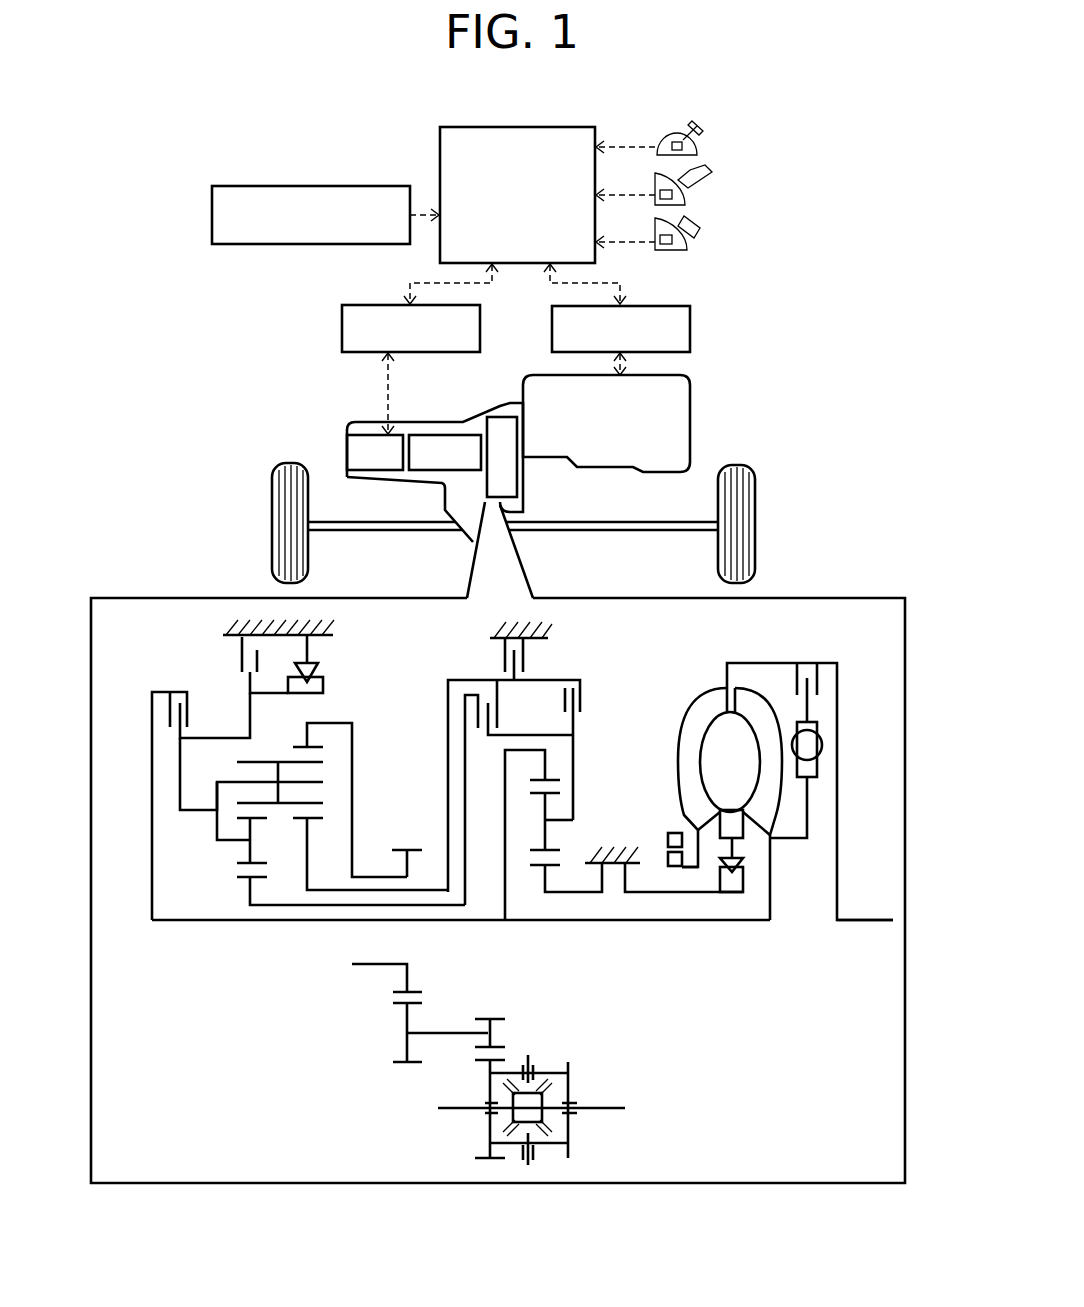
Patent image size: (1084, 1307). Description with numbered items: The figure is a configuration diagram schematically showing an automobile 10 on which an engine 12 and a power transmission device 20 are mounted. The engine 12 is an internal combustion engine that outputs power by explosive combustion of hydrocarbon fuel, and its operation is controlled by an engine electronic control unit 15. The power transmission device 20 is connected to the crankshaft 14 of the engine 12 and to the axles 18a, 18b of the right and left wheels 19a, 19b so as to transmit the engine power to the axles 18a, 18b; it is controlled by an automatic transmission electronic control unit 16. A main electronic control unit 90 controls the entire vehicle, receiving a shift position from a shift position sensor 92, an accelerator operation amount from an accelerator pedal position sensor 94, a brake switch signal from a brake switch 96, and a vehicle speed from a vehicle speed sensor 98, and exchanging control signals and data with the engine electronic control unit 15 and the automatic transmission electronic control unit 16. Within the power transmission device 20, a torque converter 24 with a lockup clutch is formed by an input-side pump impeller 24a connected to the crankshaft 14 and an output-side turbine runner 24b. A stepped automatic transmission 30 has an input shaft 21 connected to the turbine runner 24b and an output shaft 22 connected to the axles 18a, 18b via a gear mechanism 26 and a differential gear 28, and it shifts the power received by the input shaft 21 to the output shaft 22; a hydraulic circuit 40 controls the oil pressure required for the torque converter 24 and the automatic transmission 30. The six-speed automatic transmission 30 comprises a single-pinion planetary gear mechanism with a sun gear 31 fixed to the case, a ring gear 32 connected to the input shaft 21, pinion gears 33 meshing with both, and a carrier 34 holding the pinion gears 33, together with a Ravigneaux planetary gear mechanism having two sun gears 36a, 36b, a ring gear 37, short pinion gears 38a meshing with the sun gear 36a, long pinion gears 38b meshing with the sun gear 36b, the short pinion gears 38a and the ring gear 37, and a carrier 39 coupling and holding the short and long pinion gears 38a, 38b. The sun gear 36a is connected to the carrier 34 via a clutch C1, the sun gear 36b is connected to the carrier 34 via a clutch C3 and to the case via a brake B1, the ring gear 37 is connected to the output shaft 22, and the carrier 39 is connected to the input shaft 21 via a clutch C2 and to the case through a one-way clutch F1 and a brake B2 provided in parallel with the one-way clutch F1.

The automobile 10 is at (288, 152).
The engine 12 is at (690, 421).
The crankshaft 14 is at (861, 922).
The engine electronic control unit 15 is at (690, 328).
The automatic transmission electronic control unit 16 is at (342, 329).
The axle 18a is at (566, 521).
The axle 18b is at (345, 521).
The wheel 19a is at (755, 522).
The wheel 19b is at (272, 523).
The power transmission device 20 is at (330, 432).
The input shaft 21 is at (737, 922).
The output shaft 22 is at (382, 877).
The torque converter 24 is at (500, 417).
The pump impeller 24a is at (680, 738).
The turbine runner 24b is at (778, 706).
The gear mechanism 26 is at (511, 1021).
The differential gear 28 is at (576, 1066).
The automatic transmission 30 is at (447, 435).
The sun gear 31 is at (543, 866).
The ring gear 32 is at (552, 777).
The pinion gears 33 is at (558, 848).
The carrier 34 is at (563, 814).
The sun gear 36a is at (247, 880).
The sun gear 36b is at (293, 820).
The ring gear 37 is at (297, 746).
The short pinion gears 38a is at (237, 856).
The long pinion gears 38b is at (247, 756).
The carrier 39 is at (193, 809).
The hydraulic circuit 40 is at (366, 435).
The main electronic control unit 90 is at (440, 158).
The shift position sensor 92 is at (690, 150).
The accelerator pedal position sensor 94 is at (690, 196).
The brake switch 96 is at (690, 243).
The vehicle speed sensor 98 is at (212, 214).
The brake B1 is at (530, 649).
The brake B2 is at (242, 649).
The clutch C1 is at (478, 711).
The clutch C2 is at (152, 701).
The clutch C3 is at (581, 693).
The one-way clutch F1 is at (316, 652).